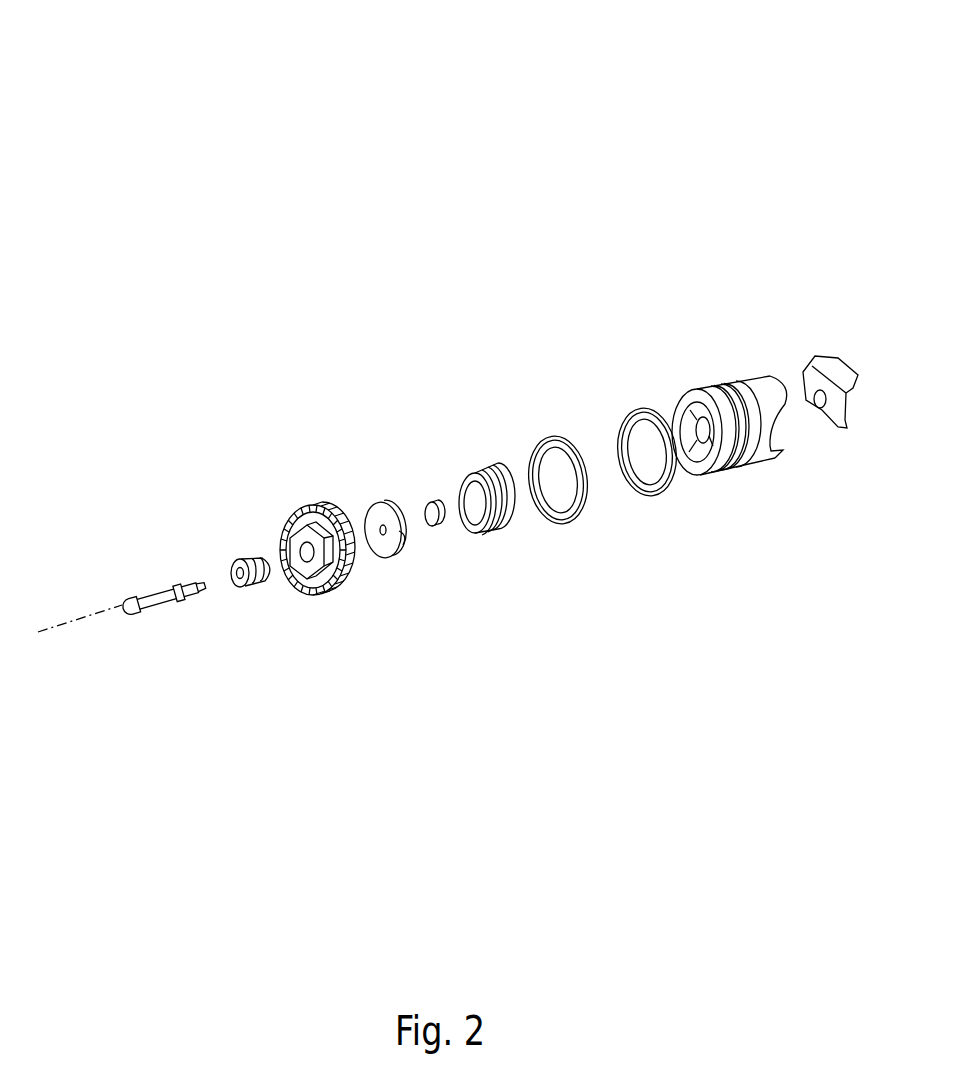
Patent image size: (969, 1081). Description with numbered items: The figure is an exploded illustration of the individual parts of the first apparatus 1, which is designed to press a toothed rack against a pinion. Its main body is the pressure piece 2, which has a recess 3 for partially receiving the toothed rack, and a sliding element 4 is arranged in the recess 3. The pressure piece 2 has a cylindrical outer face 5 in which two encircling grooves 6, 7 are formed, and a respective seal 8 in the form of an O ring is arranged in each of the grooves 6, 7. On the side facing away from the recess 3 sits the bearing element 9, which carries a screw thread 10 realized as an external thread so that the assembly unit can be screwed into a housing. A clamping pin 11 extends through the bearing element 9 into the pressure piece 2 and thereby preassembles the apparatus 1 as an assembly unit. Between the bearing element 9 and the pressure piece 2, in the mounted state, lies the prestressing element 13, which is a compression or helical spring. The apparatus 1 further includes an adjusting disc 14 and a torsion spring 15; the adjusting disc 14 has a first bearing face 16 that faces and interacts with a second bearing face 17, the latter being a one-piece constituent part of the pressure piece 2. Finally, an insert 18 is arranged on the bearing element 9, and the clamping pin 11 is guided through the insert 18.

The apparatus 1 is at (627, 138).
The pressure piece 2 is at (731, 380).
The recess 3 is at (778, 438).
The sliding element 4 is at (822, 358).
The cylindrical outer face 5 is at (749, 368).
The encircling groove 6 is at (718, 390).
The encircling groove 7 is at (695, 400).
The seal 8 is at (542, 438).
The bearing element 9 is at (300, 503).
The screw thread 10 is at (351, 586).
The clamping pin 11 is at (151, 587).
The prestressing element 13 is at (472, 462).
The adjusting disc 14 is at (374, 498).
The torsion spring 15 is at (428, 494).
The first bearing face 16 is at (410, 546).
The second bearing face 17 is at (688, 478).
The insert 18 is at (236, 548).